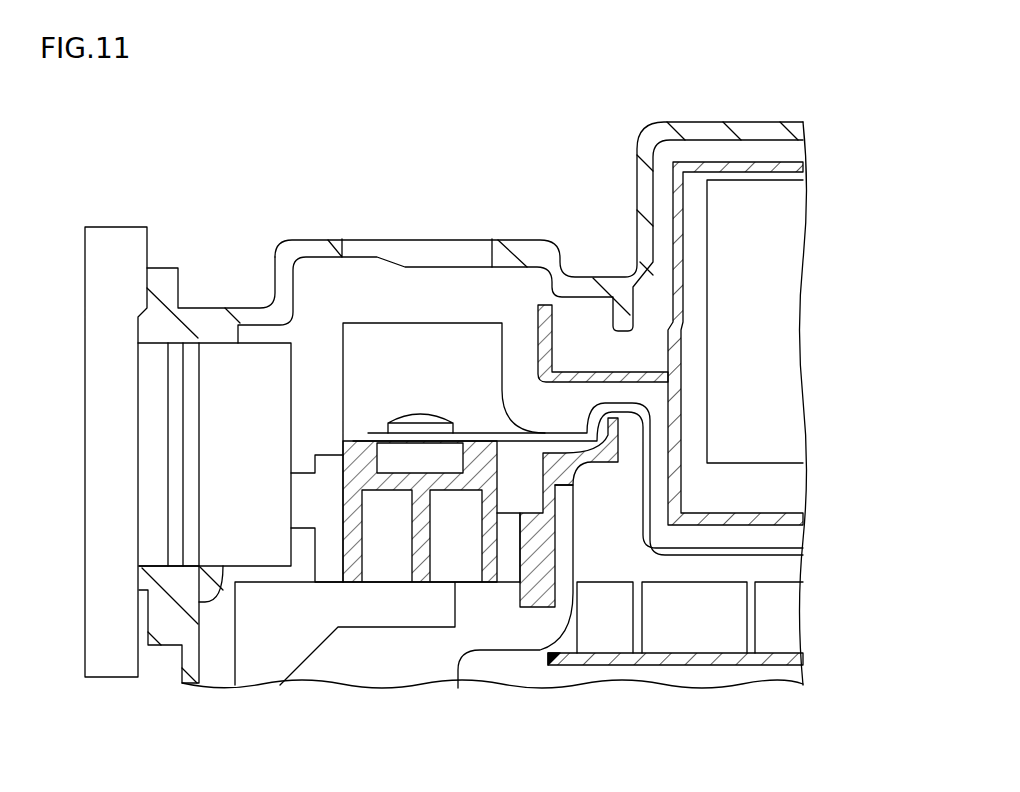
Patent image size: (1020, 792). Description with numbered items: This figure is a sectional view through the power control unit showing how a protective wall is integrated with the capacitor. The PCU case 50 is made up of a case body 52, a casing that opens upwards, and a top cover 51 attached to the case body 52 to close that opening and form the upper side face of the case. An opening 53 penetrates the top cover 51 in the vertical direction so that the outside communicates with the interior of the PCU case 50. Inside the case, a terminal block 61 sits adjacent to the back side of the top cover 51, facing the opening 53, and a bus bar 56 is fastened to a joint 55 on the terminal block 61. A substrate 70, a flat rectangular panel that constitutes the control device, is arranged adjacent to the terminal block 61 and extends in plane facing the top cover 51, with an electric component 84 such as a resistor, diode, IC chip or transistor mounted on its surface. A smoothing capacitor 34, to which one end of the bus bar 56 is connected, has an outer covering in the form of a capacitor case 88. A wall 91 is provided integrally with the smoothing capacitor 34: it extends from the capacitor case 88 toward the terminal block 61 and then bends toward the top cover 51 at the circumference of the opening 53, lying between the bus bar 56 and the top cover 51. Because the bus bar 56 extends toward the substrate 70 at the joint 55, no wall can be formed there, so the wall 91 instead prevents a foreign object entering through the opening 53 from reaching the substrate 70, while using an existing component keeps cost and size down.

The smoothing capacitor 34 is at (760, 162).
The PCU case 50 is at (180, 667).
The top cover 51 is at (716, 121).
The case body 52 is at (165, 632).
The opening 53 is at (345, 247).
The joint 55 is at (366, 458).
The bus bar 56 is at (498, 440).
The terminal block 61 is at (487, 585).
The substrate 70 is at (777, 657).
The electric component 84 is at (677, 620).
The capacitor case 88 is at (733, 517).
The wall 91 is at (548, 340).